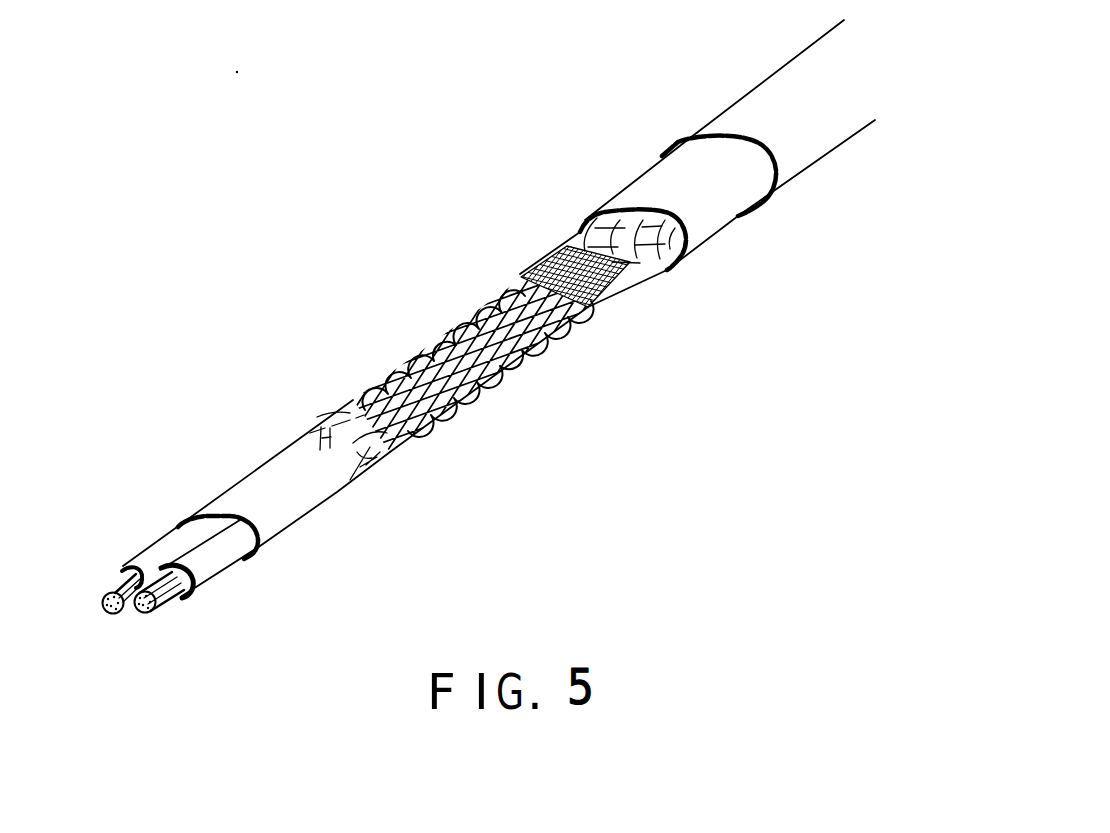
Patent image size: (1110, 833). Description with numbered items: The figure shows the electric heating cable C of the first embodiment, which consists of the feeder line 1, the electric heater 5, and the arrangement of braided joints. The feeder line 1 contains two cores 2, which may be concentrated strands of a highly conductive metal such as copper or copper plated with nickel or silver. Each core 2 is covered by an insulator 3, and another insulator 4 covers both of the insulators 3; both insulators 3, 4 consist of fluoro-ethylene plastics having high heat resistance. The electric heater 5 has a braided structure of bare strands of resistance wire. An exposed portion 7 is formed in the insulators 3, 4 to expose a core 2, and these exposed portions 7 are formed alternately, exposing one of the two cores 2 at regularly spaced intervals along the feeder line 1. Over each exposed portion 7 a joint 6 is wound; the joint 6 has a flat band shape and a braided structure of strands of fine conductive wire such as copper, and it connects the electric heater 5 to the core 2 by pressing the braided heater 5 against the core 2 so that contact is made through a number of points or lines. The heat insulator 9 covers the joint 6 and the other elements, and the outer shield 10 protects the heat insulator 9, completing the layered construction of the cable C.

The electric heating cable C is at (373, 208).
The feeder line 1 is at (204, 477).
The cores 2 is at (103, 593).
The insulator 3 is at (220, 552).
The insulator 4 is at (334, 479).
The electric heater 5 is at (428, 421).
The joint 6 is at (619, 281).
The exposed portion 7 is at (531, 240).
The heat insulator 9 is at (656, 178).
The outer shield 10 is at (763, 99).